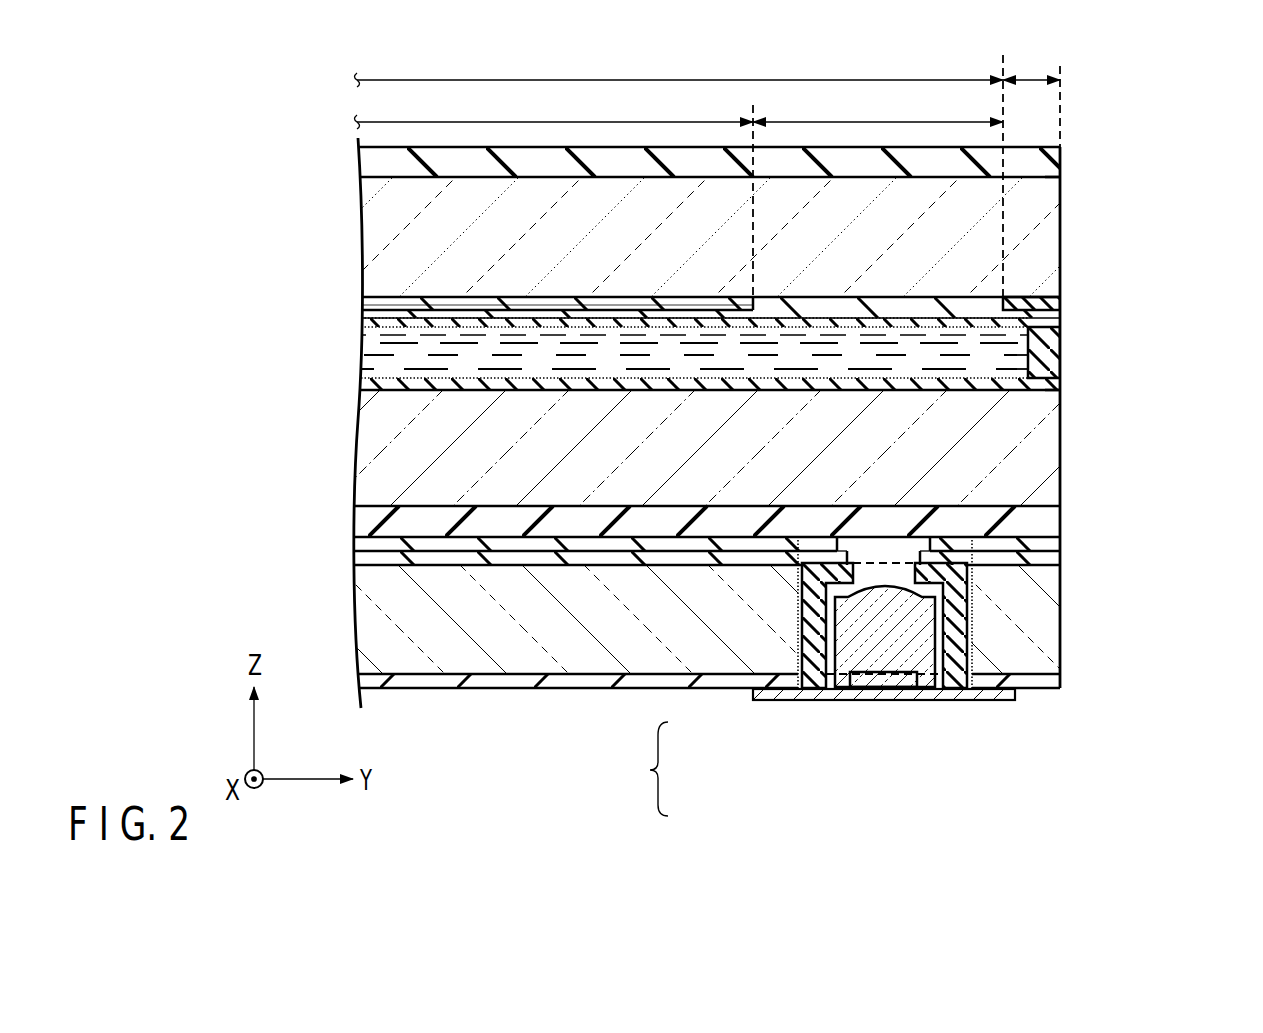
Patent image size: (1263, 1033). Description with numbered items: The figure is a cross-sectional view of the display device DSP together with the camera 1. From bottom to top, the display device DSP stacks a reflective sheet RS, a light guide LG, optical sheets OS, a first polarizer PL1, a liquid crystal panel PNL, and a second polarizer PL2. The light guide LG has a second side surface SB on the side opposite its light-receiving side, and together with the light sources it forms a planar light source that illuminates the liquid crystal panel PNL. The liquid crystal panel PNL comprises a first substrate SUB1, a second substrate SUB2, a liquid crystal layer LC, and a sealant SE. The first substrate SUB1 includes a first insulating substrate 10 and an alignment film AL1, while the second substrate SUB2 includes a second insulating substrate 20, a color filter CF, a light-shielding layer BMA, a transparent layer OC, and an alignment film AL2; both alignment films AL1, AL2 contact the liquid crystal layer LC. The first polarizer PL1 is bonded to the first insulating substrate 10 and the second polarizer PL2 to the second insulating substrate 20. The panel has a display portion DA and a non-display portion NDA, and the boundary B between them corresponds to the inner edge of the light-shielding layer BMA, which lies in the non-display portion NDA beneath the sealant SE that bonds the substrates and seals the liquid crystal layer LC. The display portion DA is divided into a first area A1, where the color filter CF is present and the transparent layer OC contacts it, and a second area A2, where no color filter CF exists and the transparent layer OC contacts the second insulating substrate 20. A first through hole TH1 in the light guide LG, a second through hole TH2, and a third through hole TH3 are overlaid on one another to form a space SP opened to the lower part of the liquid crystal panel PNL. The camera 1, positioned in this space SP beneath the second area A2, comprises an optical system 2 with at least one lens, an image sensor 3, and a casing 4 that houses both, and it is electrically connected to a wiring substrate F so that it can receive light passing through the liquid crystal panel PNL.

The display device DSP is at (338, 160).
The display portion DA is at (679, 68).
The first area A1 is at (554, 194).
The second area A2 is at (878, 108).
The boundary B is at (1003, 78).
The non-display portion NDA is at (1031, 96).
The second polarizer PL2 is at (705, 162).
The second substrate SUB2 is at (1082, 212).
The second insulating substrate 20 is at (705, 237).
The light-shielding layer BMA is at (1031, 303).
The transparent layer OC is at (700, 307).
The liquid crystal panel PNL is at (1148, 305).
The alignment film AL2 is at (684, 322).
The sealant SE is at (1044, 352).
The alignment film AL1 is at (700, 384).
The first substrate SUB1 is at (1082, 428).
The first insulating substrate 10 is at (700, 448).
The color filter CF is at (546, 303).
The liquid crystal layer LC is at (684, 352).
The first polarizer PL1 is at (700, 521).
The optical sheets OS is at (700, 551).
The second side surface SB is at (1068, 610).
The light guide LG is at (700, 619).
The reflective sheet RS is at (700, 681).
The camera 1 is at (966, 626).
The optical system 2 is at (900, 640).
The image sensor 3 is at (878, 690).
The casing 4 is at (972, 655).
The wiring substrate F is at (1004, 702).
The space SP is at (650, 770).
The first through hole TH1 is at (802, 630).
The second through hole TH2 is at (823, 545).
The third through hole TH3 is at (840, 678).